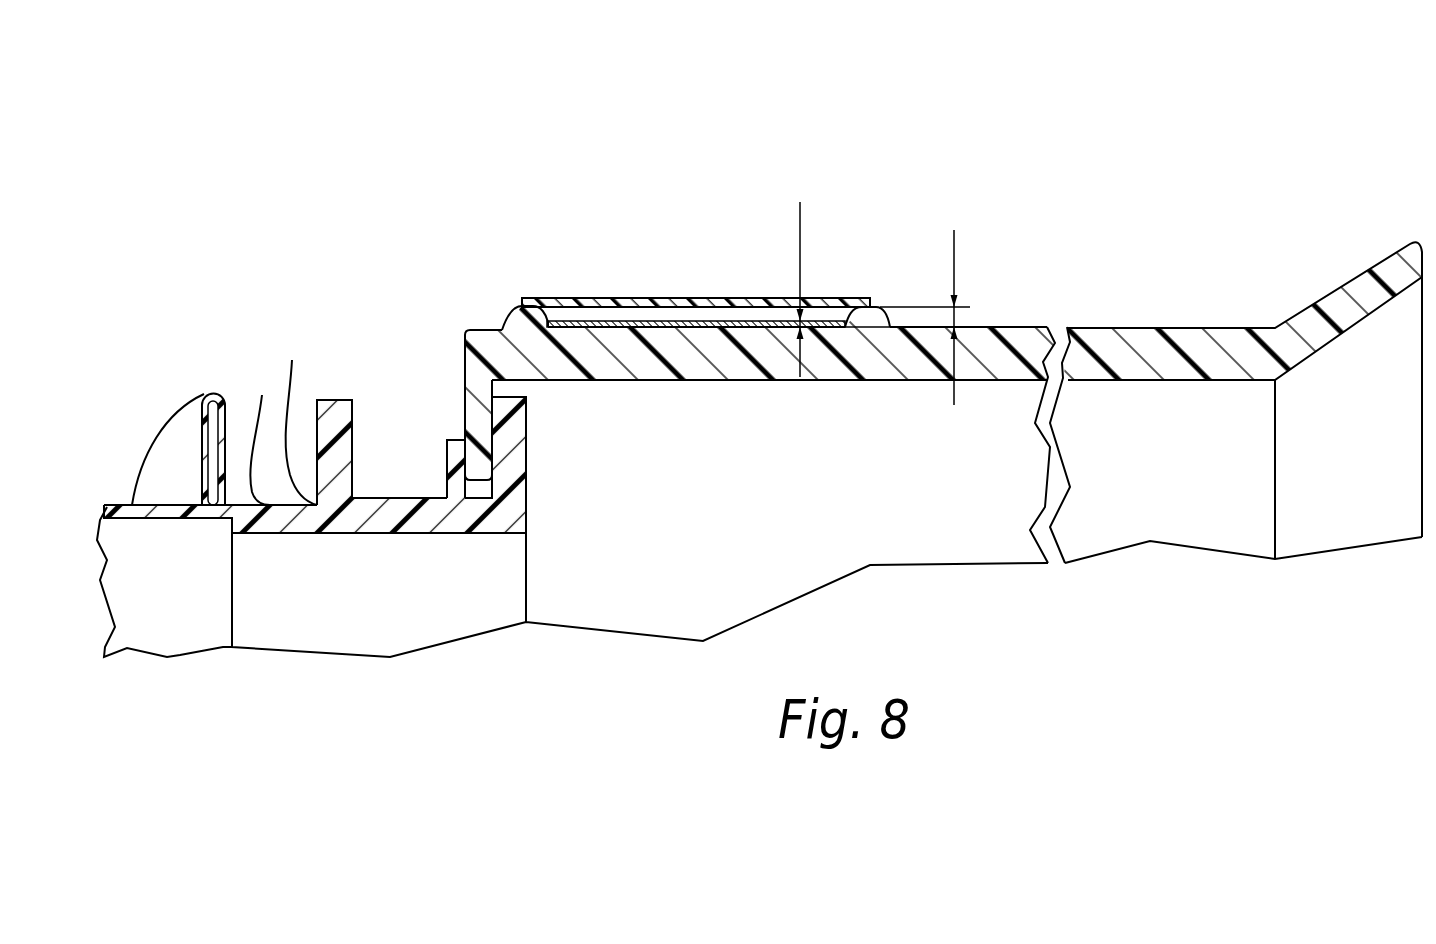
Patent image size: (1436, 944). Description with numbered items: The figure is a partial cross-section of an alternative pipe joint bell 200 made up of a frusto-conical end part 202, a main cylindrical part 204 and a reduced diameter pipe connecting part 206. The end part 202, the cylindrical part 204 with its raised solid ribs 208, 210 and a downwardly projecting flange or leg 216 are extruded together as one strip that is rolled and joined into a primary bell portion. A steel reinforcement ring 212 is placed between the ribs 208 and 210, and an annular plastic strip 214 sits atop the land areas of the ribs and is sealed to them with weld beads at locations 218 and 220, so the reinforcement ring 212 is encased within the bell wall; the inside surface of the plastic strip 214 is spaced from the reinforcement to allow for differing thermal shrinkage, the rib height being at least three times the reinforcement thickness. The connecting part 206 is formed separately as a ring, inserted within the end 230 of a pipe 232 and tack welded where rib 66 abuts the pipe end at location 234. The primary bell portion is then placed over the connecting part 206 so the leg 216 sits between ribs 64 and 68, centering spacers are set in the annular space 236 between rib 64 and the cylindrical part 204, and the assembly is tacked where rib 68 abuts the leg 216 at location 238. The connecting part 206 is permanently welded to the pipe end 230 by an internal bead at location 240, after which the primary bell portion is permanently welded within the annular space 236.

The pipe joint bell 200 is at (1097, 128).
The frusto-conical end part 202 is at (1390, 240).
The main cylindrical part 204 is at (741, 393).
The reduced diameter pipe connecting part 206 is at (416, 547).
The raised solid rib 208 is at (520, 318).
The raised solid rib 210 is at (866, 318).
The reinforcement ring 212 is at (722, 321).
The annular plastic strip 214 is at (648, 298).
The downwardly projecting flange or leg 216 is at (463, 372).
The weld bead location 218 is at (510, 305).
The weld bead location 220 is at (880, 306).
The pipe end 230 is at (262, 395).
The pipe 232 is at (180, 386).
The tack weld location 234 is at (292, 360).
The annular space 236 is at (546, 397).
The tack weld location 238 is at (468, 444).
The weld seal location 240 is at (230, 522).
The rib 64 is at (528, 490).
The rib 66 is at (338, 400).
The rib 68 is at (446, 452).